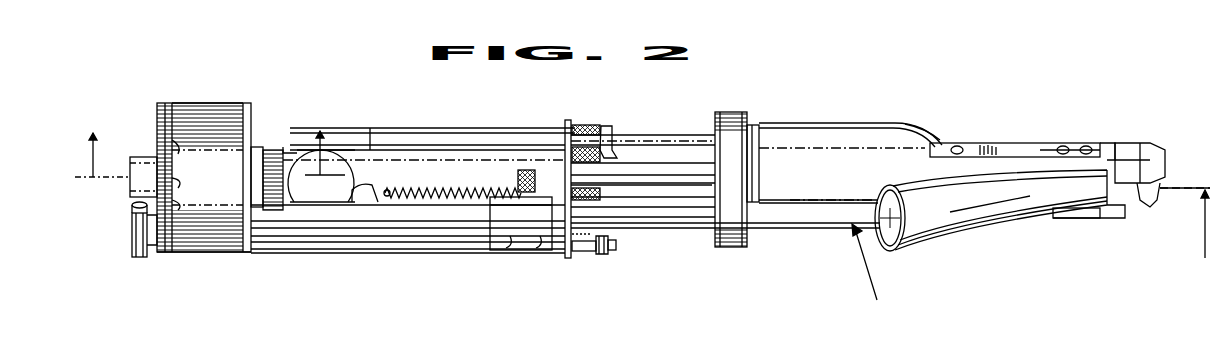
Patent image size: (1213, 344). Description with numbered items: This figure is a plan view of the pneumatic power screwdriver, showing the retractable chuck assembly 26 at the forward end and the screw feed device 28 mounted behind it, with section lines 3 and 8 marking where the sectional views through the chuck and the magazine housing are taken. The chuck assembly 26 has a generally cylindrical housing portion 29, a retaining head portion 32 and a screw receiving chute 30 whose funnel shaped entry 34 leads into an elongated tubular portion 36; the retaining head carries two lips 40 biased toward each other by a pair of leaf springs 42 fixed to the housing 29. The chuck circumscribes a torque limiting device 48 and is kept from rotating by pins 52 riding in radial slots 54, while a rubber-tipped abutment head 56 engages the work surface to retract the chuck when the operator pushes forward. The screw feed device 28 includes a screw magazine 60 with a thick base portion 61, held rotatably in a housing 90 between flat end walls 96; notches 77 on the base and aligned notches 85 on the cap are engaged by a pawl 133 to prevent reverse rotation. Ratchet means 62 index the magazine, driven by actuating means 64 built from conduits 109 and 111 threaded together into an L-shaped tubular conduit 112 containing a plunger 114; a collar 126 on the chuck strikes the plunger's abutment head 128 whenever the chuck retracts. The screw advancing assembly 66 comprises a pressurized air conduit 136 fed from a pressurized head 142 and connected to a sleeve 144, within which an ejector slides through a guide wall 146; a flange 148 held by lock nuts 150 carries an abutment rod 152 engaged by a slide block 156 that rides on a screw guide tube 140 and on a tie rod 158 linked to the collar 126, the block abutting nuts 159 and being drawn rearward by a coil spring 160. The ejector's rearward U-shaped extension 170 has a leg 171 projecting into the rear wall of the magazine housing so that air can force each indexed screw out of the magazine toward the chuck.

The section line 3- 3 is at (1031, 256).
The section line 8- 8 is at (215, 168).
The retractable chuck assembly 26 is at (1125, 220).
The screw feed device 28 is at (408, 254).
The cylindrical housing portion 29 is at (906, 132).
The screw receiving chute 30 is at (905, 247).
The retaining head portion 32 is at (1110, 148).
The funnel shaped entry 34 is at (887, 196).
The tubular portion 36 is at (1000, 212).
The lips 40 is at (1138, 195).
The leaf springs 42 is at (972, 143).
The torque limiting device 48 is at (667, 132).
The pins 52 is at (757, 126).
The radial slots 54 is at (815, 123).
The rubber-tipped abutment head 56 is at (1155, 144).
The screw magazine 60 is at (246, 100).
The base portion 61 is at (192, 112).
The ratchet means 62 is at (277, 146).
The actuating means 64 is at (412, 127).
The screw advancing assembly 66 is at (130, 250).
The notches 77 is at (178, 206).
The notches 85 is at (158, 122).
The housing 90 is at (207, 101).
The end walls 96 is at (160, 253).
The conduit 109 is at (440, 127).
The conduit 111 is at (342, 127).
The L-shaped tubular conduit 112 is at (387, 127).
The plunger 114 is at (590, 123).
The collar 126 is at (728, 111).
The abutment head 128 is at (613, 128).
The pawl 133 is at (172, 252).
The pressurized air conduit 136 is at (375, 186).
The screw guide tube 140 is at (690, 233).
The pressurized head 142 is at (352, 165).
The sleeve 144 is at (430, 254).
The guide wall 146 is at (567, 259).
The flange 148 is at (603, 255).
The lock nuts 150 is at (617, 245).
The abutment rod 152 is at (584, 252).
The slide block 156 is at (505, 251).
The tie rod 158 is at (712, 183).
The nuts 159 is at (518, 179).
The coil spring 160 is at (450, 190).
The U-shaped extension 170 is at (132, 235).
The leg 171 is at (132, 210).